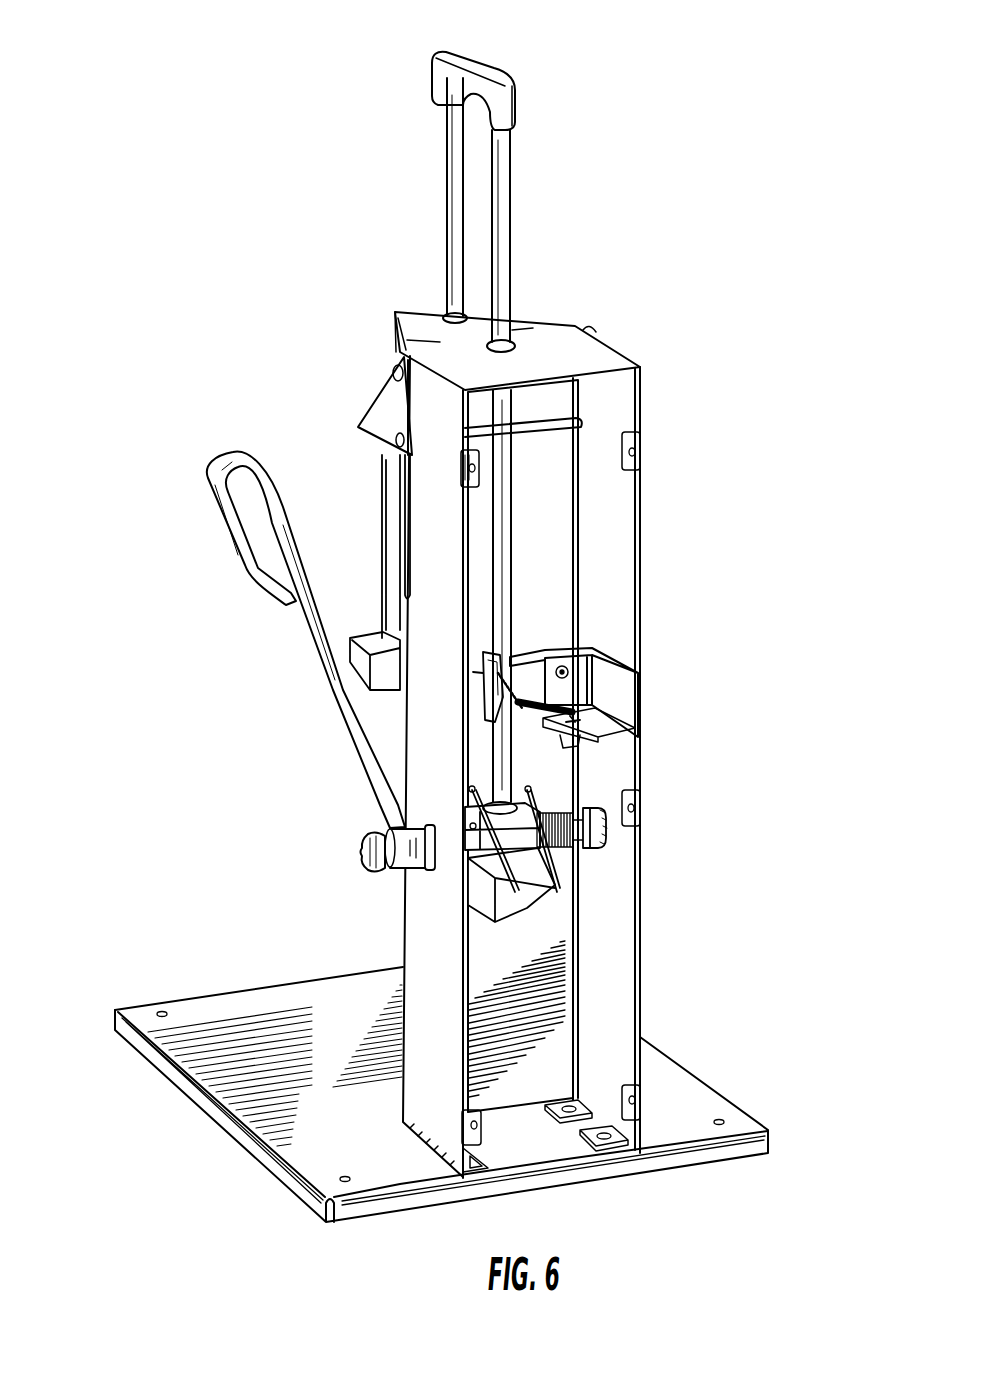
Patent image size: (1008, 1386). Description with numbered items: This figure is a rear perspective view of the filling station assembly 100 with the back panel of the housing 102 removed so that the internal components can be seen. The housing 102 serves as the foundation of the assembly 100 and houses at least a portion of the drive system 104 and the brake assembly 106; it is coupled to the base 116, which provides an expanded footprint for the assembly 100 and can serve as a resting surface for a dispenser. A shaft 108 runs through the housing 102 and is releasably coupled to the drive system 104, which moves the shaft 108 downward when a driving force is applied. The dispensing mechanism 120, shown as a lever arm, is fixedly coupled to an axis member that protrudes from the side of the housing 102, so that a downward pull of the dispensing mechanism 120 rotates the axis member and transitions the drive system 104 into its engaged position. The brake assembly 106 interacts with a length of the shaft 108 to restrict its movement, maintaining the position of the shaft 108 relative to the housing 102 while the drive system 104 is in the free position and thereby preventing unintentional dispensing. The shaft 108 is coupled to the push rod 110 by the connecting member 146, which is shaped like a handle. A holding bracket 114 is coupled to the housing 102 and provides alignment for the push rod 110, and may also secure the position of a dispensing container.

The filling station assembly 100 is at (770, 282).
The housing 102 is at (640, 778).
The drive system 104 is at (585, 890).
The brake assembly 106 is at (612, 652).
The shaft 108 is at (508, 528).
The push rod 110 is at (447, 187).
The holding bracket 114 is at (372, 400).
The base 116 is at (180, 1095).
The dispensing mechanism 120 is at (222, 512).
The connecting member 146 is at (517, 107).